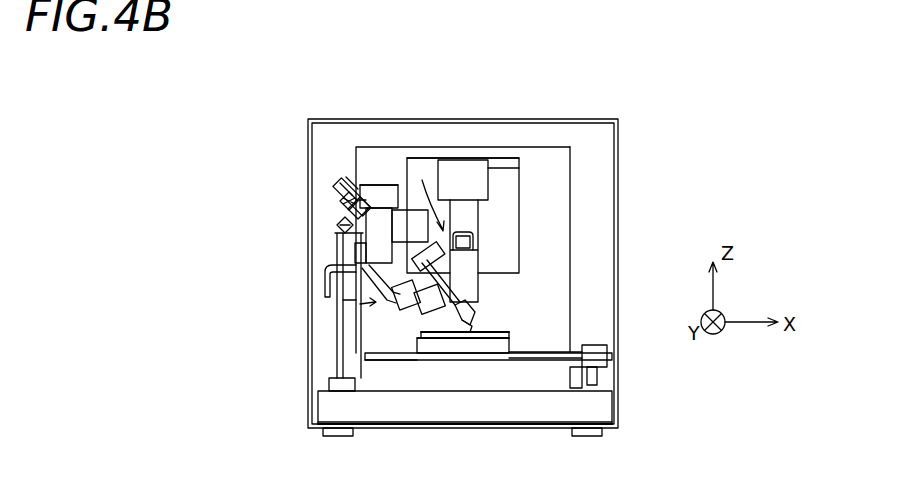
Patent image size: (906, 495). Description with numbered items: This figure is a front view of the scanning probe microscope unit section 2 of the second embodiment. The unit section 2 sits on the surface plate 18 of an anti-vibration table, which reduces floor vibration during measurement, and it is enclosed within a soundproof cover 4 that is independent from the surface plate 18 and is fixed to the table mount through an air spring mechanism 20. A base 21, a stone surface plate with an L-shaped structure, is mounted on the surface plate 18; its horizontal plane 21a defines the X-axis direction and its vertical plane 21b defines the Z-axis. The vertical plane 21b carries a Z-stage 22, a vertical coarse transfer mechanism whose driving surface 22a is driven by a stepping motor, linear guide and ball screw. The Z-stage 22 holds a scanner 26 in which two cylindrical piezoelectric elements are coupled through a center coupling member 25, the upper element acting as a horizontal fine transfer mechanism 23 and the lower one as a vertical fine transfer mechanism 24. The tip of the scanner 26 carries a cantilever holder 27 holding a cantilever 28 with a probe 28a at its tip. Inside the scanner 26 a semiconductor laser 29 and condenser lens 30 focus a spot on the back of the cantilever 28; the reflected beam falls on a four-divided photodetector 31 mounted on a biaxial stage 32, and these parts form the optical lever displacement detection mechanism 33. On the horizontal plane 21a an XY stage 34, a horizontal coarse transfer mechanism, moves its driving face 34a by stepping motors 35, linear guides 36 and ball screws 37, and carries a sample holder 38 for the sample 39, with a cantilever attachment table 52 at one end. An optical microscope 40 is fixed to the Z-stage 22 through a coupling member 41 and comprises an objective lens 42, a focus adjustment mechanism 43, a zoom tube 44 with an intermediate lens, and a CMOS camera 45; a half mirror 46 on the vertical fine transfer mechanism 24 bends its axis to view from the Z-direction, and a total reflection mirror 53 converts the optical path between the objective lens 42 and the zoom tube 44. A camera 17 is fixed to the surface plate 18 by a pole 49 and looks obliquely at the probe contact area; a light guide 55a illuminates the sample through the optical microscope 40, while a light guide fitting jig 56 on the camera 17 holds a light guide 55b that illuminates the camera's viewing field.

The scanning probe microscope unit section 2 is at (540, 121).
The soundproof cover 4 is at (620, 122).
The camera 17 is at (345, 215).
The surface plate 18 is at (600, 411).
The air spring mechanism 20 is at (334, 438).
The base 21 is at (557, 170).
The horizontal plane 21a is at (368, 354).
The vertical plane 21b is at (555, 200).
The Z-stage 22 is at (418, 203).
The driving surface 22a is at (507, 189).
The horizontal fine transfer mechanism 23 is at (479, 175).
The vertical fine transfer mechanism 24 is at (470, 278).
The center coupling member 25 is at (480, 253).
The scanner 26 is at (503, 188).
The cantilever holder 27 is at (490, 362).
The cantilever 28 is at (457, 354).
The probe 28a is at (433, 347).
The semiconductor laser 29 is at (470, 244).
The condenser lens 30 is at (560, 242).
The photodetector 31 is at (380, 203).
The biaxial stage 32 is at (405, 203).
The displacement detection mechanism 33 is at (462, 195).
The XY stage 34 is at (514, 340).
The driving face 34a is at (427, 331).
The stepping motor 35 is at (595, 357).
The linear guide 36 is at (330, 375).
The ball screw 37 is at (430, 414).
The sample holder 38 is at (480, 334).
The sample 39 is at (400, 365).
The optical microscope 40 is at (358, 304).
The coupling member 41 is at (366, 200).
The objective lens 42 is at (417, 308).
The focus adjustment mechanism 43 is at (356, 253).
The zoom tube 44 is at (356, 182).
The CMOS camera 45 is at (362, 180).
The half mirror 46 is at (442, 294).
The pole 49 is at (342, 318).
The cantilever attachment table 52 is at (500, 330).
The total reflection mirror 53 is at (328, 270).
The light guide 55a is at (345, 200).
The light guide 55b is at (338, 226).
The light guide fitting jig 56 is at (340, 184).